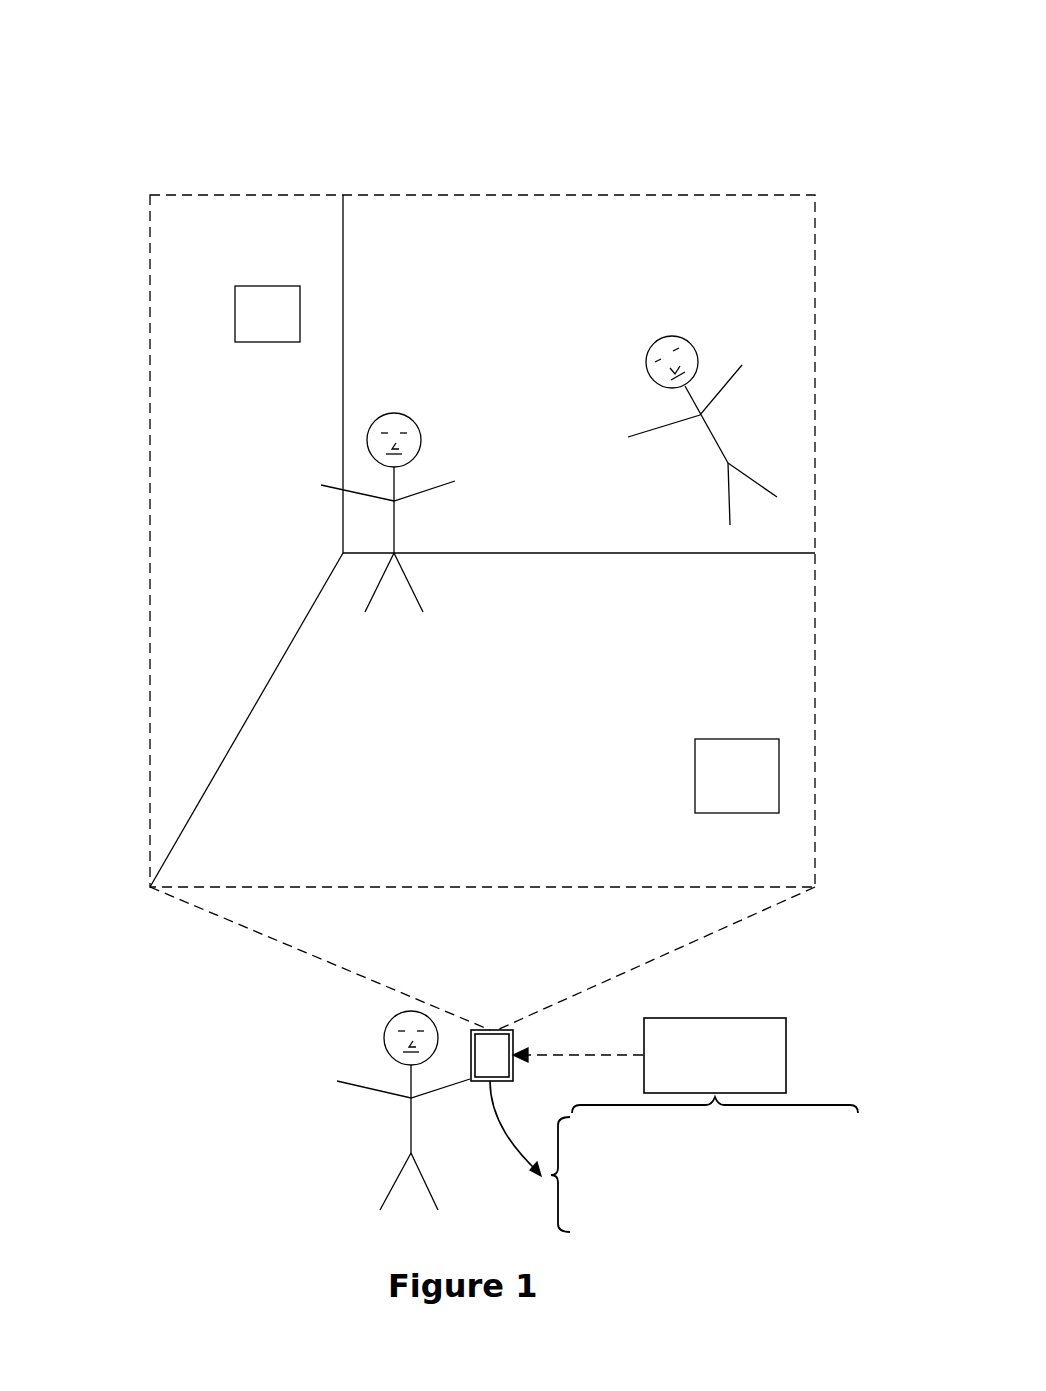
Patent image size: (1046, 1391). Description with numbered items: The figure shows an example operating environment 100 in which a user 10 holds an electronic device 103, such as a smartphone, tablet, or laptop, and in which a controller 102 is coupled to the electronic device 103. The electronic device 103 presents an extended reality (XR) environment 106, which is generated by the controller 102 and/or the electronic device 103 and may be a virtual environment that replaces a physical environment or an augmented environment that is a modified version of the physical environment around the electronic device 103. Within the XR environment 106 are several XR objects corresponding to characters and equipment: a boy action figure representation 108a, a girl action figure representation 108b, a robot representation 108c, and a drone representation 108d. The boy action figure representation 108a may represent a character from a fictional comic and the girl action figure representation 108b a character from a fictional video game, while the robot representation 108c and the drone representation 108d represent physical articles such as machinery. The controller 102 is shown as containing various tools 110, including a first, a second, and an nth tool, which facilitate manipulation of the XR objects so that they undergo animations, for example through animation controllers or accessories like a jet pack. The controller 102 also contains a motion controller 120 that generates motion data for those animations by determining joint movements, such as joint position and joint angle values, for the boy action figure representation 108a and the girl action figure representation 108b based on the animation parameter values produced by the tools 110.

The operating environment 100 is at (104, 32).
The extended reality (XR) environment 106 is at (501, 876).
The boy action figure representation 108a is at (394, 526).
The girl action figure representation 108b is at (760, 485).
The robot representation 108c is at (779, 768).
The drone representation 108d is at (235, 331).
The user 10 is at (390, 1194).
The electronic device 103 is at (514, 1043).
The controller 102 is at (696, 1074).
The tools 110 is at (656, 1161).
The motion controller 120 is at (687, 1219).